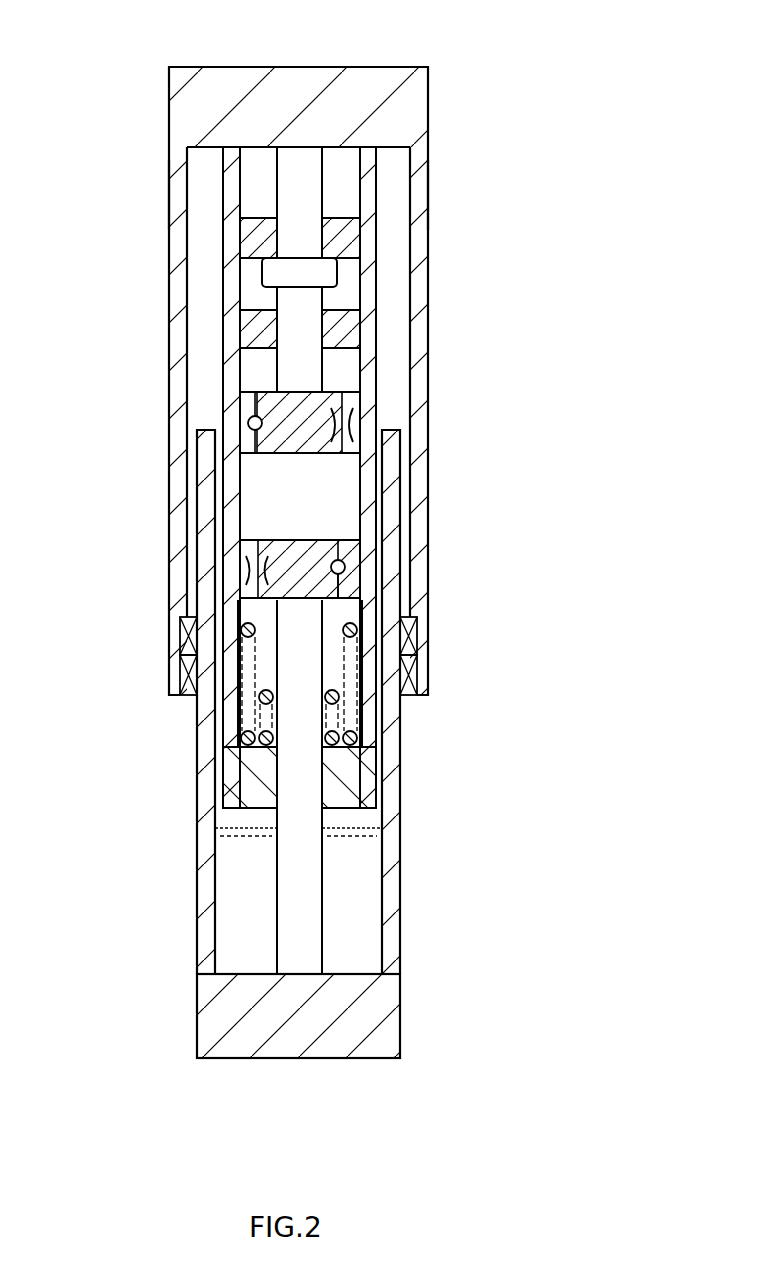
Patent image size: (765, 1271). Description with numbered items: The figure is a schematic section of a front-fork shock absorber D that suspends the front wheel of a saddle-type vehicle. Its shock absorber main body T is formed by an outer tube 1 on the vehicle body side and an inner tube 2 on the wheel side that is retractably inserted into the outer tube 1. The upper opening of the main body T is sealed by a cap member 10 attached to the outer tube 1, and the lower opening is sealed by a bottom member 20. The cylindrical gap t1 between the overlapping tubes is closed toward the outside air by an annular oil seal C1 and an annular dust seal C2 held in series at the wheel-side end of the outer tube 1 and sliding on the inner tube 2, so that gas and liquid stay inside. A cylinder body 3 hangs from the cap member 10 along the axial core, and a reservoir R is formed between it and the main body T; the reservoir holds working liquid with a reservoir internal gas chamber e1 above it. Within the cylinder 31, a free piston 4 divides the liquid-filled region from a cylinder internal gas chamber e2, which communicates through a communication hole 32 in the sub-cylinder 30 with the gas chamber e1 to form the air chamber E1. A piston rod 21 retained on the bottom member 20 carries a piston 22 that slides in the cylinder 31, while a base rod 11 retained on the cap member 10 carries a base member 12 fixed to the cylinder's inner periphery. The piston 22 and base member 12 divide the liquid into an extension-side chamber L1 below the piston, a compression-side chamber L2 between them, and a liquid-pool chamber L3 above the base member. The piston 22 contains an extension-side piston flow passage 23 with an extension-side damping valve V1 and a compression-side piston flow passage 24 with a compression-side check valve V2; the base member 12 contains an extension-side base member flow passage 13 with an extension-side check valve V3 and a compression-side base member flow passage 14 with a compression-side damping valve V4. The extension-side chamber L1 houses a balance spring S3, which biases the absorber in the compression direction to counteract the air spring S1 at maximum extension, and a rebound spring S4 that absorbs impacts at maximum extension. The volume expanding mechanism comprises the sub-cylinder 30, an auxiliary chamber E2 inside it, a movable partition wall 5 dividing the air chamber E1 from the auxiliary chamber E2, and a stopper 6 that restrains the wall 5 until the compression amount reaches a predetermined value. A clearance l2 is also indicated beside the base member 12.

The outer tube 1 is at (418, 331).
The inner tube 2 is at (394, 795).
The cylinder body 3 is at (218, 507).
The free piston 4 is at (355, 320).
The movable partition wall 5 is at (342, 238).
The stopper 6 is at (320, 278).
The cap member 10 is at (343, 95).
The base rod 11 is at (290, 330).
The base member 12 is at (293, 435).
The extension-side base member flow passage 13 is at (240, 446).
The compression-side base member flow passage 14 is at (352, 400).
The bottom member 20 is at (288, 1037).
The piston rod 21 is at (284, 898).
The piston 22 is at (373, 613).
The extension-side piston flow passage 23 is at (265, 585).
The compression-side piston flow passage 24 is at (350, 552).
The sub-cylinder 30 is at (377, 178).
The cylinder 31 is at (368, 647).
The communication hole 32 is at (270, 165).
The shock absorber main body T is at (162, 192).
The shock absorber D is at (456, 189).
The reservoir R is at (184, 263).
The air spring S1 is at (200, 216).
The air chamber E1 is at (184, 323).
The auxiliary chamber E2 is at (247, 176).
The reservoir internal gas chamber e1 is at (397, 368).
The cylinder internal gas chamber e2 is at (247, 288).
The extension-side chamber L1 is at (265, 665).
The compression-side chamber L2 is at (247, 520).
The liquid-pool chamber L3 is at (247, 367).
The extension-side damping valve V1 is at (244, 565).
The compression-side check valve V2 is at (348, 562).
The extension-side check valve V3 is at (244, 414).
The compression-side damping valve V4 is at (352, 422).
The oil seal C1 is at (180, 637).
The dust seal C2 is at (180, 673).
The balance spring S3 is at (352, 740).
The rebound spring S4 is at (352, 705).
The clearance l2 is at (363, 468).
The cylindrical gap t1 is at (404, 493).